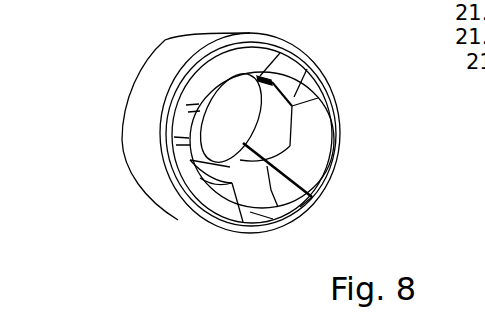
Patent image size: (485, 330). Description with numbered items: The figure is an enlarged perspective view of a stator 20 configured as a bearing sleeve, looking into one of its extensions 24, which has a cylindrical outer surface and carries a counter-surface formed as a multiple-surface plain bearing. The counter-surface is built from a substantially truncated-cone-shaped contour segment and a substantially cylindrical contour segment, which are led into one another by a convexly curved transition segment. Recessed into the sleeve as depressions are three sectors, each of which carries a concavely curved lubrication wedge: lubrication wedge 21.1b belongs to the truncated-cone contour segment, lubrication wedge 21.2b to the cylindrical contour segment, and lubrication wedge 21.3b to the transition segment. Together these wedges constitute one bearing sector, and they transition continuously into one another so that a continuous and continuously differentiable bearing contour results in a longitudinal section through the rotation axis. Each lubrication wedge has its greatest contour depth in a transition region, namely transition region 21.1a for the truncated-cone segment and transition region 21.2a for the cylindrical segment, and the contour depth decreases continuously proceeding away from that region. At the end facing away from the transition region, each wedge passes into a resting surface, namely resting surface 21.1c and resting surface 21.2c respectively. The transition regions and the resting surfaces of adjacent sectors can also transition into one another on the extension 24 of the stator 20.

The stator 20 is at (140, 191).
The extension 24 is at (140, 94).
The transition region 21.1a is at (300, 193).
The lubrication wedge 21.1b is at (318, 163).
The resting surface 21.1c is at (300, 82).
The transition region 21.2a is at (234, 184).
The lubrication wedge 21.2b is at (275, 124).
The resting surface 21.2c is at (176, 149).
The lubrication wedge 21.3b is at (200, 184).